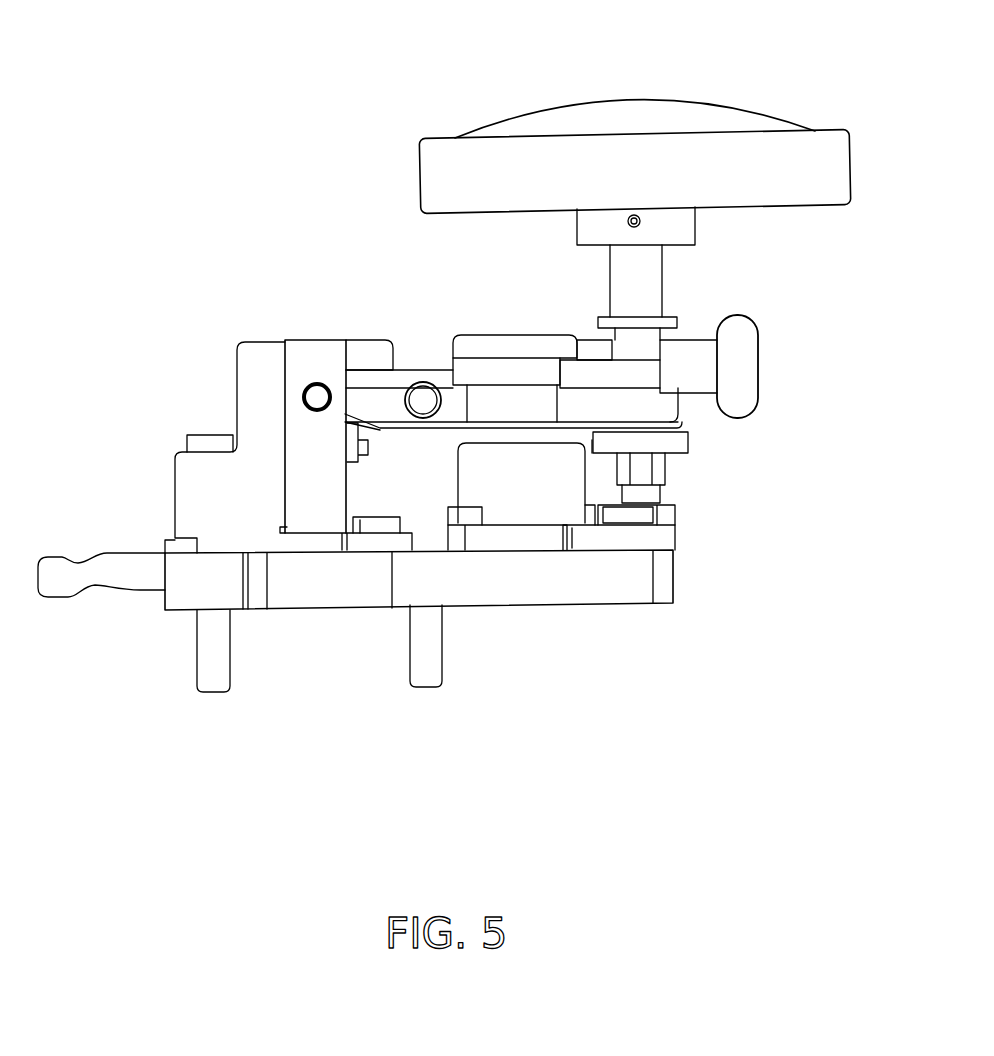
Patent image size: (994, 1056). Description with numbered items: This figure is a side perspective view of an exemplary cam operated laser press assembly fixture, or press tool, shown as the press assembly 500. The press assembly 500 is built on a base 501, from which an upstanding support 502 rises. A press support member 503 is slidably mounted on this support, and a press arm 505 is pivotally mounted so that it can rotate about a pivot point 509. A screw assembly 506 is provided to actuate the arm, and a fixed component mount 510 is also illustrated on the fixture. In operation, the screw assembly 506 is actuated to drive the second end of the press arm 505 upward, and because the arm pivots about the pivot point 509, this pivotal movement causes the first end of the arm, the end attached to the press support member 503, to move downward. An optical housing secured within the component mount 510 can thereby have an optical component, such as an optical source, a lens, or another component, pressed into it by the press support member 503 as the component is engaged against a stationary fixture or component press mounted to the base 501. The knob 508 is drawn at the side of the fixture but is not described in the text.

The press assembly 500 is at (272, 199).
The base 501 is at (475, 606).
The upstanding support 502 is at (250, 362).
The press support member 503 is at (300, 352).
The press arm 505 is at (513, 403).
The screw assembly 506 is at (636, 112).
The locking knob 508 is at (747, 367).
The pivot point 509 is at (418, 382).
The component mount 510 is at (365, 417).